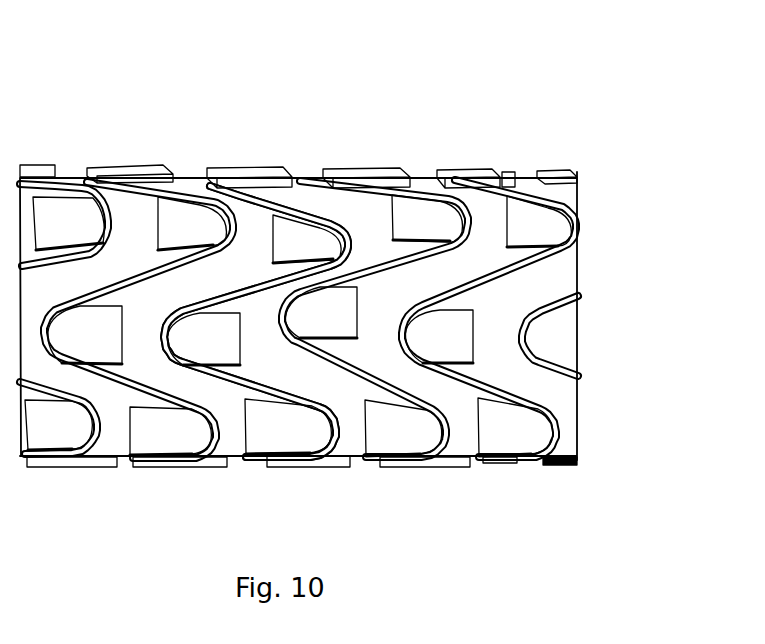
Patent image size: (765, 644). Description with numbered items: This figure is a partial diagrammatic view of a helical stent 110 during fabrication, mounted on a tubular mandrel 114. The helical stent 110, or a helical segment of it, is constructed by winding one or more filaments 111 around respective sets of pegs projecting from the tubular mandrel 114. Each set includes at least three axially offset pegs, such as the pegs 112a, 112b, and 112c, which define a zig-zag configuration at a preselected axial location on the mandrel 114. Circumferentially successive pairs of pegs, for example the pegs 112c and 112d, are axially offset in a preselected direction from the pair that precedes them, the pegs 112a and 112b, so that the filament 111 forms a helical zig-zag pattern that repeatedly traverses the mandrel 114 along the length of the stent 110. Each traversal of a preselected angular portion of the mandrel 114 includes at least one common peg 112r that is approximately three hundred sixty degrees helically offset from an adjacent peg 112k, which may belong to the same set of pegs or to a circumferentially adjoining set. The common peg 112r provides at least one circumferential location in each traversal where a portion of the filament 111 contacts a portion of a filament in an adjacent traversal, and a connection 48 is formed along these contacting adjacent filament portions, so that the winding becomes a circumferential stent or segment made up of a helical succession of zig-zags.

The helical stent 110 is at (342, 125).
The filament 111 is at (182, 183).
The peg 112a is at (507, 172).
The peg 112b is at (540, 220).
The peg 112c is at (440, 328).
The peg 112d is at (507, 433).
The adjacent peg 112k is at (327, 318).
The common peg 112r is at (297, 245).
The tubular mandrel 114 is at (537, 380).
The connection 48 is at (280, 285).